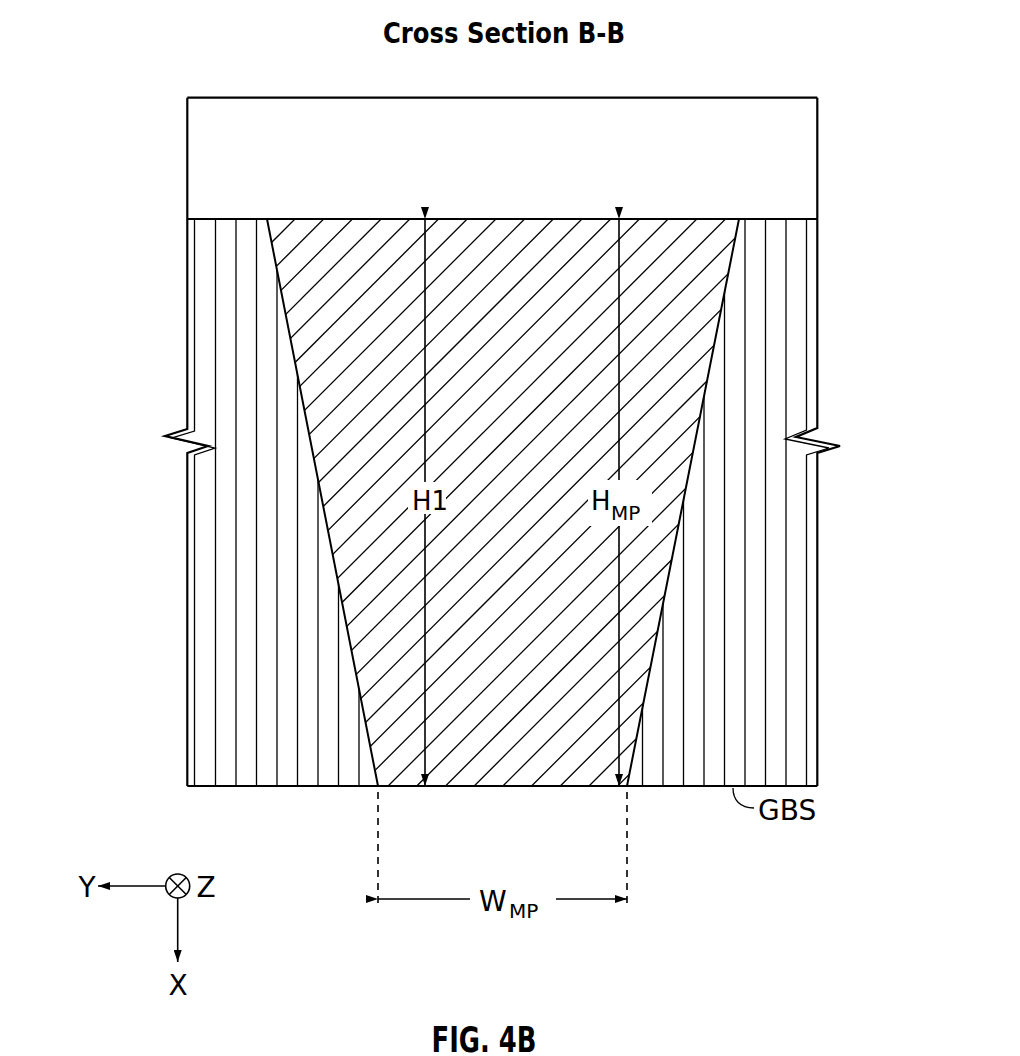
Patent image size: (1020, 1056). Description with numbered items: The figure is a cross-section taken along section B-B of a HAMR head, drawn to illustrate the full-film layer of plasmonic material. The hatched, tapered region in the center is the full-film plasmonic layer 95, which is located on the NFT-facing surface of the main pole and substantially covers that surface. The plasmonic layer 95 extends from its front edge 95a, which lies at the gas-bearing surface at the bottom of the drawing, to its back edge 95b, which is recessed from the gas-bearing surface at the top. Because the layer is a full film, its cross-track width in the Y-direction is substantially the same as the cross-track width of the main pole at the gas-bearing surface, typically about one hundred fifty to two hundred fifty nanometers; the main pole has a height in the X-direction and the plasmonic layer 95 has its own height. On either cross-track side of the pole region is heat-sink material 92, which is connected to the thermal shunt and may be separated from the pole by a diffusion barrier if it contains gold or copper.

The heat-sink material 92 is at (209, 383).
The full-film plasmonic layer 95 is at (366, 255).
The front edge 95a is at (407, 787).
The back edge 95b is at (507, 218).